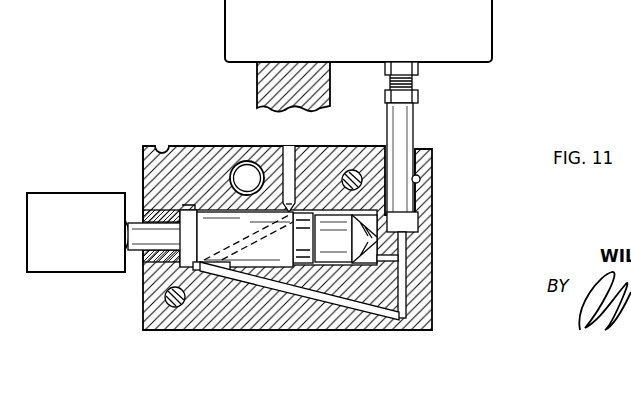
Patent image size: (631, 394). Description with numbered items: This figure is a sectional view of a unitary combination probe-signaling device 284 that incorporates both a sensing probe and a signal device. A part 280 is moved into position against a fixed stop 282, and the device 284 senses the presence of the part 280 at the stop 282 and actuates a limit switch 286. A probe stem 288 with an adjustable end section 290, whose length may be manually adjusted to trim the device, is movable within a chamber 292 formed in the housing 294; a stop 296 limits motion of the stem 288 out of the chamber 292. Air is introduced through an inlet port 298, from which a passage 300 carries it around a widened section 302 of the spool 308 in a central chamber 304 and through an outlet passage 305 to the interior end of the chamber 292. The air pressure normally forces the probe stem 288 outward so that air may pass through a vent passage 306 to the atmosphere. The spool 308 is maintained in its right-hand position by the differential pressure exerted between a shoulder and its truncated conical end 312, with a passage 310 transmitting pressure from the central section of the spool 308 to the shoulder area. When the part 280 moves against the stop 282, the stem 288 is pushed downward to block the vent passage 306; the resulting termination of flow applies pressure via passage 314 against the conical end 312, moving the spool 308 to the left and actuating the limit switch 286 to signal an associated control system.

The part 280 is at (478, 40).
The fixed stop 282 is at (273, 83).
The combination probe-signaling device 284 is at (449, 140).
The limit switch 286 is at (74, 208).
The probe stem 288 is at (407, 130).
The adjustable end section 290 is at (393, 80).
The chamber 292 is at (433, 193).
The housing 294 is at (418, 300).
The stop 296 is at (420, 177).
The inlet port 298 is at (244, 172).
The passage 300 is at (232, 195).
The widened section 302 is at (205, 270).
The central chamber 304 is at (300, 216).
The outlet passage 305 is at (365, 308).
The vent passage 306 is at (419, 222).
The spool 308 is at (240, 239).
The passage 310 is at (197, 276).
The truncated conical end 312 is at (367, 263).
The passage 314 is at (408, 257).